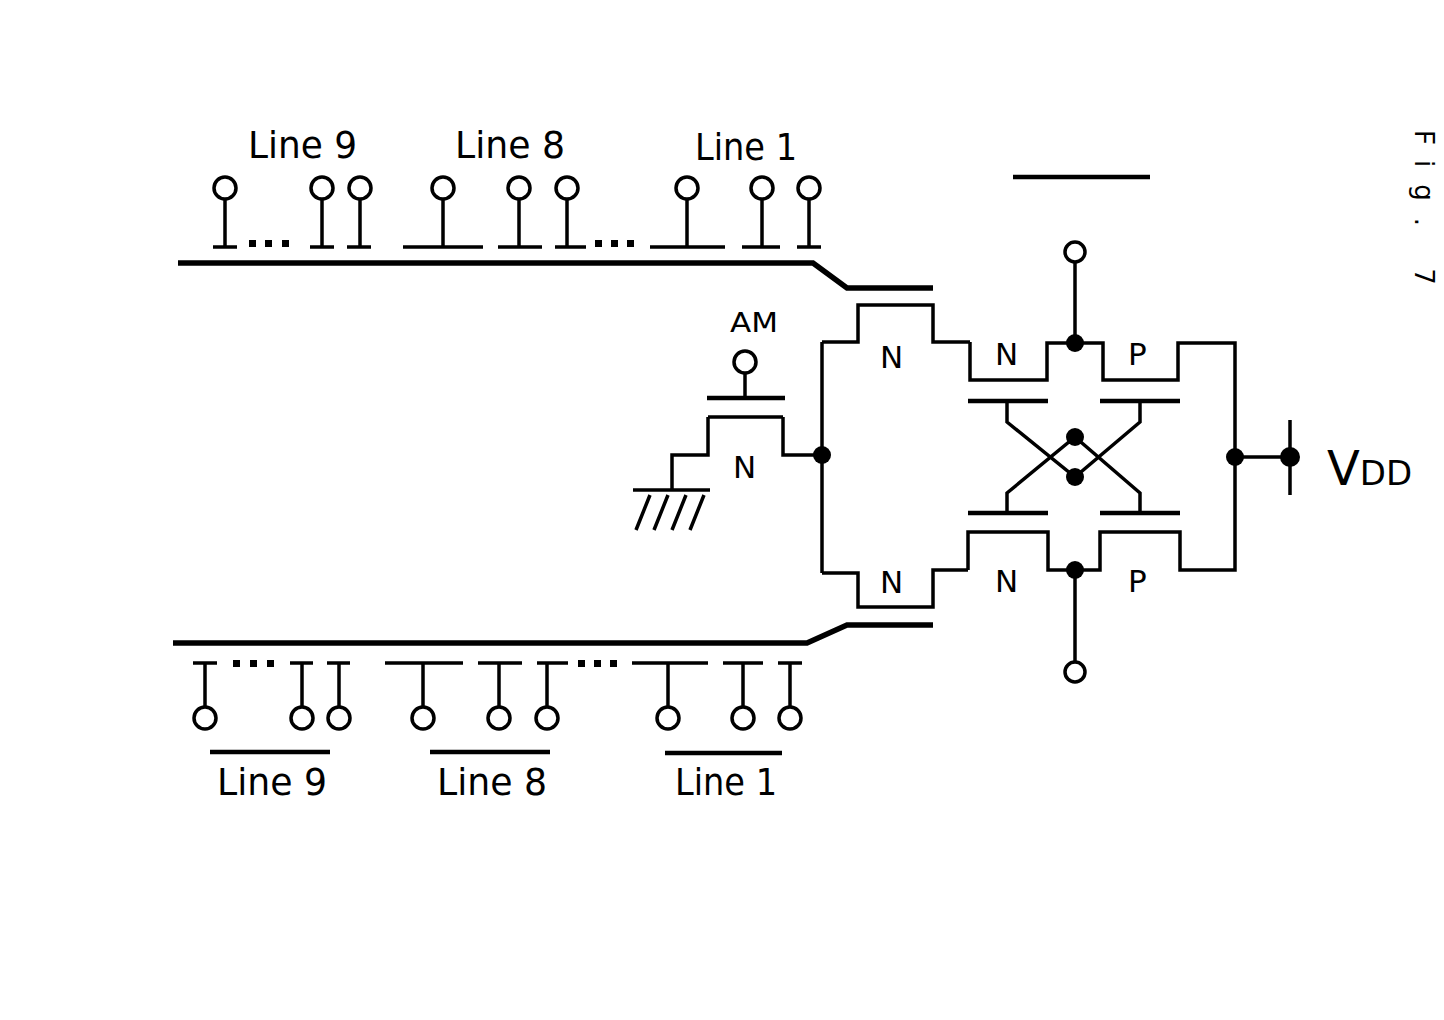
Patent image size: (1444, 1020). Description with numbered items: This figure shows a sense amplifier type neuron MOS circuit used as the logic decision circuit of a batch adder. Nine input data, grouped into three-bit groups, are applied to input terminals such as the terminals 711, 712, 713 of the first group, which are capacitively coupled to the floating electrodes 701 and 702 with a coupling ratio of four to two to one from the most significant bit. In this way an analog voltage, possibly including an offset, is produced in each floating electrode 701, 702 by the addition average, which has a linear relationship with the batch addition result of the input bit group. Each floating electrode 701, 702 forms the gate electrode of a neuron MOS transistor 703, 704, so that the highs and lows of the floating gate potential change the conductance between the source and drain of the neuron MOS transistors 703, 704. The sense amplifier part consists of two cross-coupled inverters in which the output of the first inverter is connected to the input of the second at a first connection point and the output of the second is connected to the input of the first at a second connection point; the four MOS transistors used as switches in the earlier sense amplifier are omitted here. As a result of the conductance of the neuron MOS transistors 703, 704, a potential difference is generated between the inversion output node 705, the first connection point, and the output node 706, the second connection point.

The floating electrode 701 is at (248, 268).
The floating electrode 702 is at (242, 638).
The neuron MOS transistor 703 is at (933, 290).
The neuron MOS transistor 704 is at (933, 627).
The inversion output node 705 is at (1085, 252).
The output node 706 is at (1085, 672).
The first memory cell transistor 711 is at (810, 177).
The second memory cell transistor 712 is at (763, 177).
The third memory cell transistor 713 is at (688, 177).